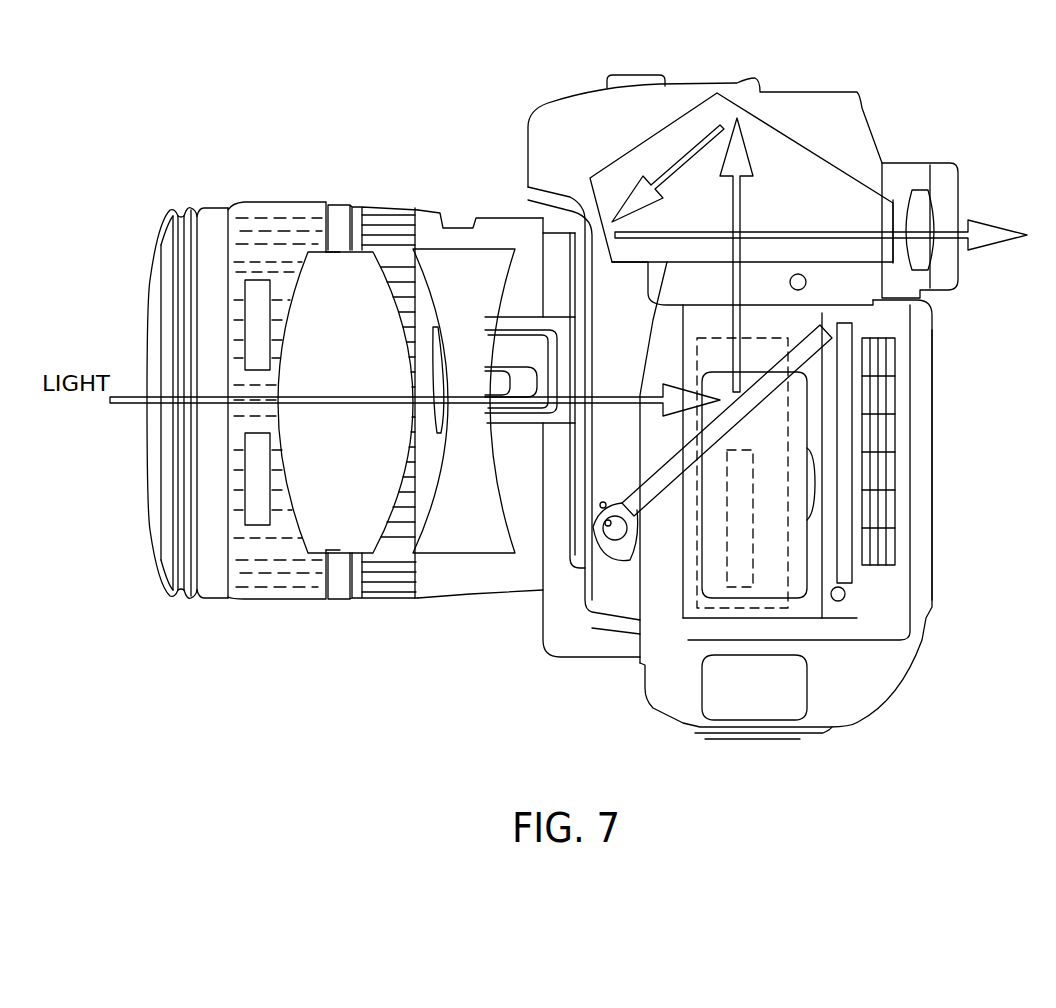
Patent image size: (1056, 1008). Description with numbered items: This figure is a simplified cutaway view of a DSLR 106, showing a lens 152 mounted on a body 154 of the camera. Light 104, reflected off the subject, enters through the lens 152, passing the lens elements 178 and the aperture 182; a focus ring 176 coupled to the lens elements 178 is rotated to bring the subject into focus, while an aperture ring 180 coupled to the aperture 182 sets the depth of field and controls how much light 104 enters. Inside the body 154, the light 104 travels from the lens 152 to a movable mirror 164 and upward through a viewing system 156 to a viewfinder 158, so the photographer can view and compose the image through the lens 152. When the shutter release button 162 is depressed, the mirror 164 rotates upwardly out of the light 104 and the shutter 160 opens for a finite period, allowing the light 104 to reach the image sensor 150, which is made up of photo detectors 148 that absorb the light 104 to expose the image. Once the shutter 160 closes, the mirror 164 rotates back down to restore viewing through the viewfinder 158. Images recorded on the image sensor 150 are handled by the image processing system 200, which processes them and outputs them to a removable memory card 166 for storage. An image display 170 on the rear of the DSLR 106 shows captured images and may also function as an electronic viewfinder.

The light 104 is at (170, 405).
The DSLR 106 is at (475, 712).
The photo detectors 148 is at (893, 500).
The image sensor 150 is at (897, 390).
The lens 152 is at (243, 625).
The body 154 is at (880, 710).
The viewing system 156 is at (788, 168).
The viewfinder 158 is at (992, 209).
The shutter 160 is at (850, 330).
The shutter release button 162 is at (632, 83).
The movable mirror 164 is at (637, 510).
The removable memory card 166 is at (748, 587).
The image display 170 is at (932, 575).
The focus ring 176 is at (393, 587).
The lens elements 178 is at (453, 275).
The aperture ring 180 is at (300, 202).
The aperture 182 is at (257, 293).
The image processing system 200 is at (790, 583).